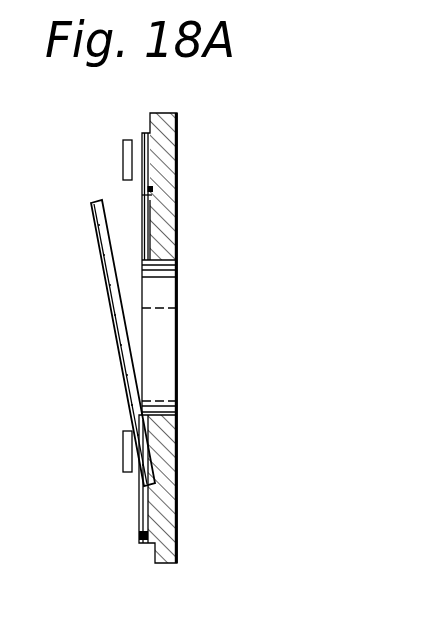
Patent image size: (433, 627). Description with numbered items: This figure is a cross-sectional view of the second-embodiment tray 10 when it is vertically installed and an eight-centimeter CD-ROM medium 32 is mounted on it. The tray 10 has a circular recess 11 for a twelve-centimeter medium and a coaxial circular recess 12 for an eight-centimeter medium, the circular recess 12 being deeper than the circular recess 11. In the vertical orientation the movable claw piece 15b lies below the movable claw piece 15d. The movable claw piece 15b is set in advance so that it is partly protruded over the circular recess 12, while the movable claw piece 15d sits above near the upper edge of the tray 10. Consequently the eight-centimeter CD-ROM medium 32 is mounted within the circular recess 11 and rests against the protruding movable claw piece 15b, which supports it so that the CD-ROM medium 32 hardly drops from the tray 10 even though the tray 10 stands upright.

The tray 10 is at (178, 126).
The circular recess 11 is at (150, 188).
The circular recess 12 is at (150, 229).
The movable claw piece 15d is at (127, 140).
The movable claw piece 15b is at (122, 452).
The 8-cm CD-ROM medium 32 is at (120, 342).